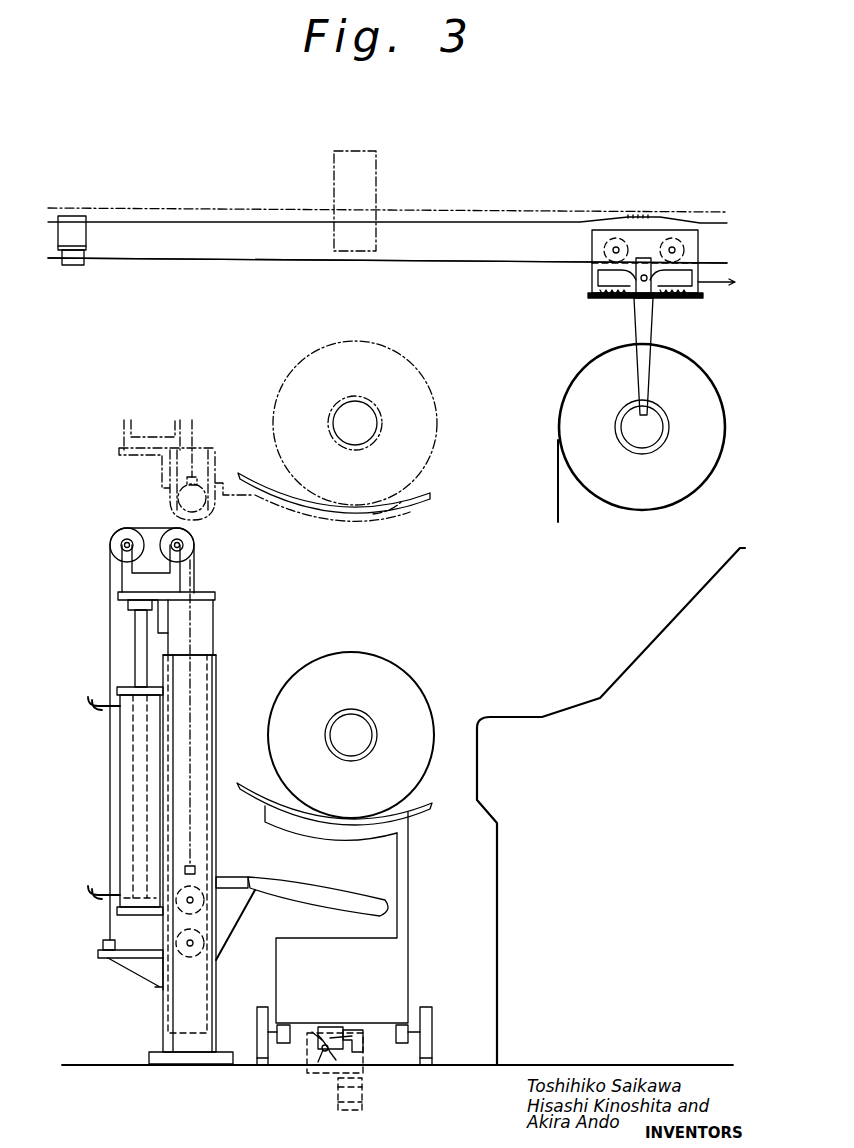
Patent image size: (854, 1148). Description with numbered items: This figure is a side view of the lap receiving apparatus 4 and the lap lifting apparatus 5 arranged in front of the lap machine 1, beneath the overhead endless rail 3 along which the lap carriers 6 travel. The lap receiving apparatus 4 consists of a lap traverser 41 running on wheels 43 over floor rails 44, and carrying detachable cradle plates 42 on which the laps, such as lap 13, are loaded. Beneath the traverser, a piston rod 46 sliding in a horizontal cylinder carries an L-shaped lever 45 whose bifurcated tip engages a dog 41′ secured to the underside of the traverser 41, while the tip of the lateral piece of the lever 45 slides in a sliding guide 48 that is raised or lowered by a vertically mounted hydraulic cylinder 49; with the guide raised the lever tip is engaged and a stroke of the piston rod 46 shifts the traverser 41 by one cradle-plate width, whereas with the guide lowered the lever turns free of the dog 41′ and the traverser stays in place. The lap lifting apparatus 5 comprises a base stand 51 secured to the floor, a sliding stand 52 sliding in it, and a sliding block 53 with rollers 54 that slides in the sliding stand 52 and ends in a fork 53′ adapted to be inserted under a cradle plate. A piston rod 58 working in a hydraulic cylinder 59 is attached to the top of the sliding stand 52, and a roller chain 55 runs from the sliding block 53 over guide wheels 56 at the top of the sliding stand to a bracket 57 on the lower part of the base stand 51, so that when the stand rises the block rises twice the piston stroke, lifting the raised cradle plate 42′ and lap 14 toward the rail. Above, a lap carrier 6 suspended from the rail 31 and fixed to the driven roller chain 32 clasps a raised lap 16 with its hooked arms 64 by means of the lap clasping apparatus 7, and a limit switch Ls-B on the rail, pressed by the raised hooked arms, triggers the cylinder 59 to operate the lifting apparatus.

The lap machine 1 is at (652, 648).
The overhead endless rail 3 is at (245, 262).
The lap receiving apparatus 4 is at (439, 784).
The lap lifting apparatus 5 is at (220, 640).
The lap carrier 6 is at (686, 214).
The lap clasping apparatus 7 is at (372, 162).
The lap 13 is at (362, 654).
The lap 14 is at (425, 392).
The lap 16 is at (688, 486).
The rail 31 is at (440, 264).
The roller chain 32 is at (480, 210).
The lap traverser 41 is at (410, 950).
The dog 41′ is at (322, 1036).
The cradle plate 42 is at (432, 812).
The cradle plate 42′ is at (430, 502).
The wheels 43 is at (430, 1012).
The rails 44 is at (433, 1060).
The L-shaped lever 45 is at (278, 1066).
The piston rod 46 is at (333, 1068).
The sliding guide 48 is at (360, 1042).
The hydraulic cylinder 49 is at (360, 1096).
The base stand 51 is at (165, 1046).
The sliding stand 52 is at (203, 616).
The sliding block 53 is at (232, 884).
The fork 53′ is at (308, 900).
The rollers 54 is at (200, 948).
The roller chain 55 is at (194, 576).
The guide wheels 56 is at (194, 546).
The bracket 57 is at (100, 966).
The piston rod 58 is at (134, 633).
The hydraulic cylinder 59 is at (122, 743).
The hooked arms 64 is at (648, 324).
The limit switch Ls-B is at (78, 275).